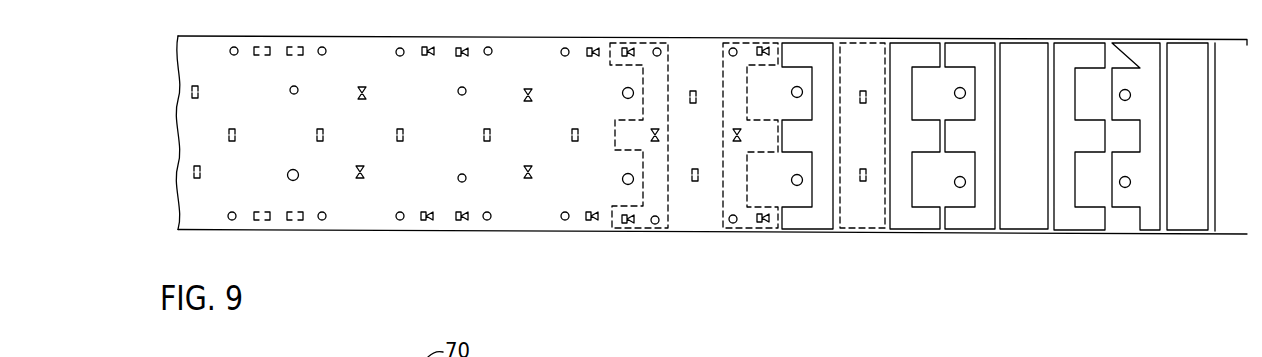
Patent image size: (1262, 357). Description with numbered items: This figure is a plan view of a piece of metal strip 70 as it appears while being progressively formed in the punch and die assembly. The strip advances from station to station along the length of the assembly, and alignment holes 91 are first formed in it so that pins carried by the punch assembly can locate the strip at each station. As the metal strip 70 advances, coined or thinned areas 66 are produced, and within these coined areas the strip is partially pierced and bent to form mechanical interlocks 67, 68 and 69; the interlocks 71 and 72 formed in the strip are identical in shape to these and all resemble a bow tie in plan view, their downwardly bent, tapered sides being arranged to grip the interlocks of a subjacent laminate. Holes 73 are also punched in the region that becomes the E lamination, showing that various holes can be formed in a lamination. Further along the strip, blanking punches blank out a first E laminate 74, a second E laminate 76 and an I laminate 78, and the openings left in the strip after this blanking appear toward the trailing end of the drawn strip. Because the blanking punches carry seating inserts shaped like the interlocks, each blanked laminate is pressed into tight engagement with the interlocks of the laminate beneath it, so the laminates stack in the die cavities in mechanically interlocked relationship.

The coined area 66 is at (296, 47).
The mechanical interlock 67 is at (361, 86).
The mechanical interlock 68 is at (428, 46).
The mechanical interlock 69 is at (461, 47).
The metal strip 70 is at (189, 235).
The mechanical interlock 71 is at (491, 134).
The mechanical interlock 72 is at (404, 135).
The hole 73 is at (234, 46).
The first E laminate 74 is at (646, 231).
The second E laminate 76 is at (783, 230).
The I laminate 78 is at (890, 215).
The alignment hole 91 is at (291, 170).